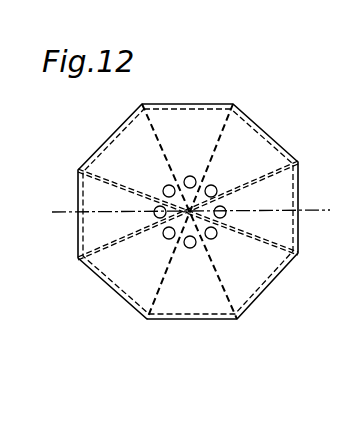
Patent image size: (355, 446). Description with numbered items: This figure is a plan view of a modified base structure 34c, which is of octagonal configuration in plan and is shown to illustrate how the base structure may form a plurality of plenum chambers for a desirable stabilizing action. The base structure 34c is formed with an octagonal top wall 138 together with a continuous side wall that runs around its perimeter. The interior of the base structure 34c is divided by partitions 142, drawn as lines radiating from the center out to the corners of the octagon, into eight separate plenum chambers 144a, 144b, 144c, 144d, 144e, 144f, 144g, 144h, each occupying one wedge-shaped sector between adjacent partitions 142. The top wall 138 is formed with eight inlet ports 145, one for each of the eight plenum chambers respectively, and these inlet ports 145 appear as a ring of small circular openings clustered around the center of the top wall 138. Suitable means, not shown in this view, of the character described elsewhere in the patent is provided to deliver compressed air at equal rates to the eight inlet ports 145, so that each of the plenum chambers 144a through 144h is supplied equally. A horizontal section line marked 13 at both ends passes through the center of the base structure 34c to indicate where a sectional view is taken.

The base structure 34c is at (270, 125).
The octagonal top wall 138 is at (164, 122).
The partitions 142 is at (212, 160).
The plenum chamber 144a is at (97, 199).
The plenum chamber 144b is at (118, 158).
The plenum chamber 144c is at (193, 123).
The plenum chamber 144d is at (242, 130).
The plenum chamber 144e is at (275, 196).
The plenum chamber 144f is at (254, 278).
The plenum chamber 144g is at (194, 302).
The plenum chamber 144h is at (138, 277).
The inlet ports 145 is at (197, 183).
The section line 13- 13 is at (62, 216).